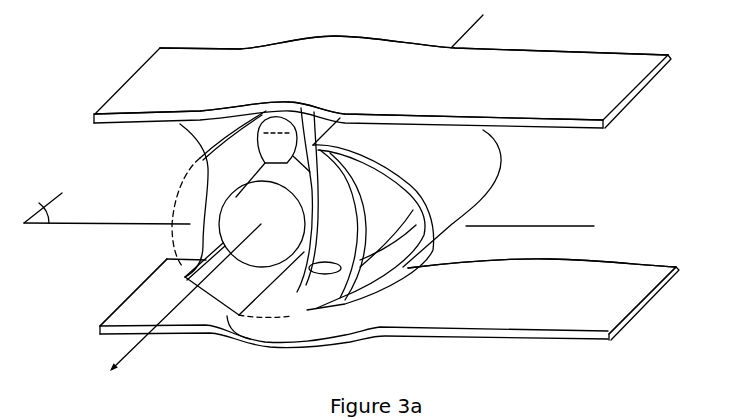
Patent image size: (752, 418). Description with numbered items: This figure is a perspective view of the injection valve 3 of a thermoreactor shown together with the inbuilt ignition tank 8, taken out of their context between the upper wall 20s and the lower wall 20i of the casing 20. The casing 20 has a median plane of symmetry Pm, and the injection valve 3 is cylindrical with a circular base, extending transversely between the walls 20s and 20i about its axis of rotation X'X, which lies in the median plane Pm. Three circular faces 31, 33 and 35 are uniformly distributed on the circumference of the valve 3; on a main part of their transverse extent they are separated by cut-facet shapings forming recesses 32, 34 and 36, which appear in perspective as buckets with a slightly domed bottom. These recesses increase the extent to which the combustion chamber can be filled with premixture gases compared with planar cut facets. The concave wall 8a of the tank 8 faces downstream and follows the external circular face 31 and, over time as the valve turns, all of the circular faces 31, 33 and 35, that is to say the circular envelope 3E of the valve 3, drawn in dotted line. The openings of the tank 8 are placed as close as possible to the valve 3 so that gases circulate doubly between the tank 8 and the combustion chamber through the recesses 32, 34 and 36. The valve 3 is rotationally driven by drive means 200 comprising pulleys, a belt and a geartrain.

The injection valve 3 is at (300, 211).
The circular envelope 3E is at (176, 182).
The inbuilt ignition tank 8 is at (408, 288).
The concave wall 8a is at (364, 249).
The casing 20 is at (643, 48).
The upper wall 20s is at (510, 76).
The lower wall 20i is at (599, 268).
The circular face 31 is at (233, 125).
The recess 32 is at (291, 152).
The circular face 33 is at (346, 209).
The recess 34 is at (300, 292).
The circular face 35 is at (188, 296).
The recess 36 is at (192, 206).
The drive means 200 is at (665, 409).
The axis of rotation X is at (185, 306).
The axis of rotation X' is at (474, 31).
The median plane of symmetry Pm is at (309, 209).